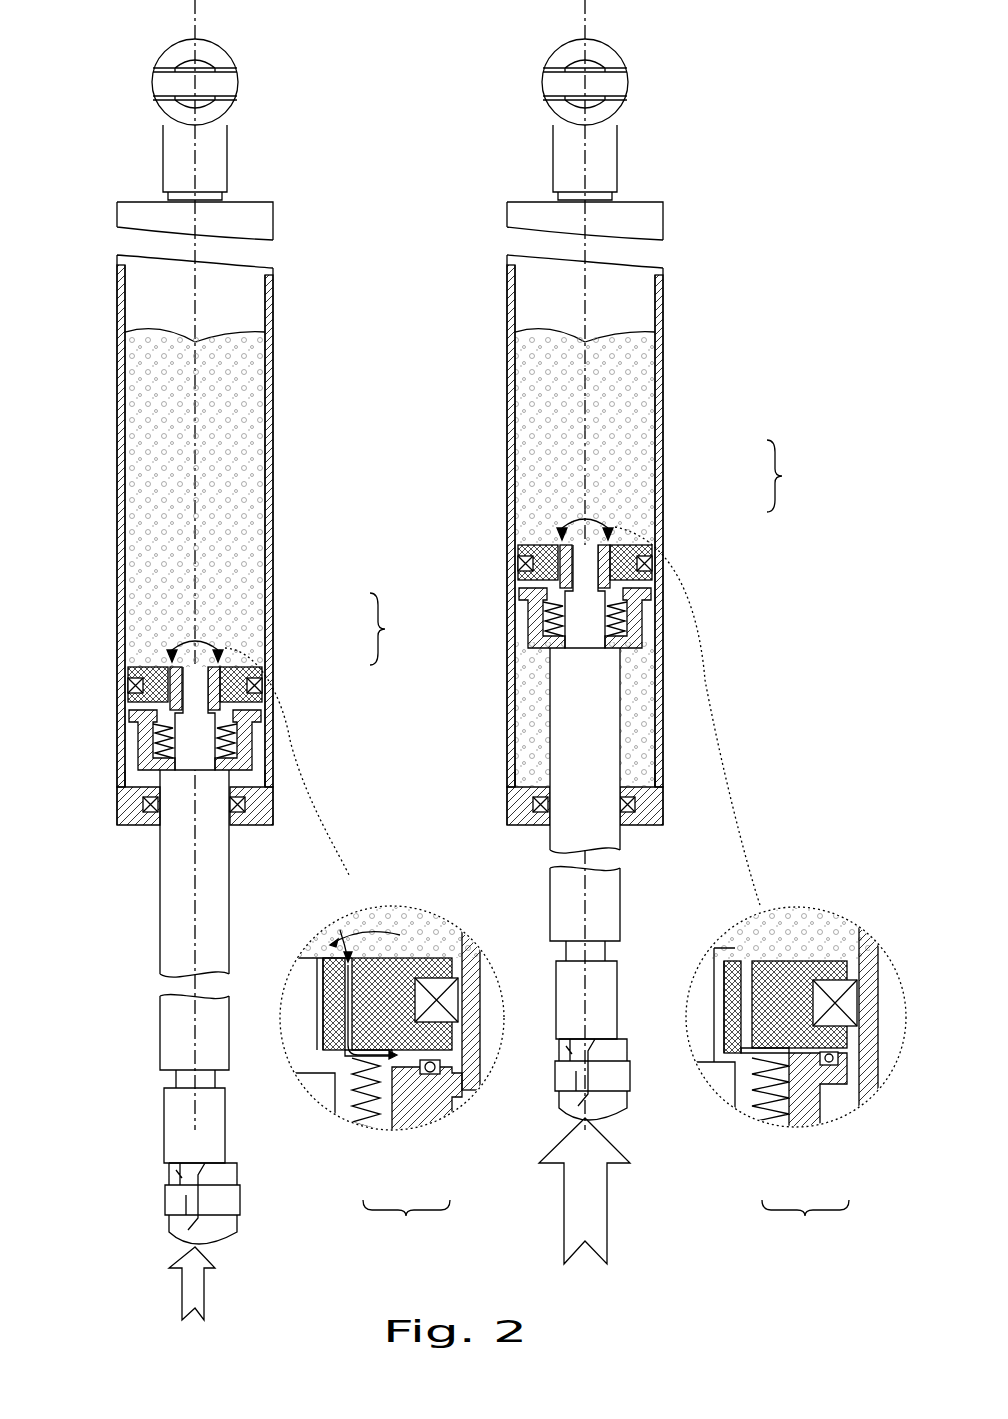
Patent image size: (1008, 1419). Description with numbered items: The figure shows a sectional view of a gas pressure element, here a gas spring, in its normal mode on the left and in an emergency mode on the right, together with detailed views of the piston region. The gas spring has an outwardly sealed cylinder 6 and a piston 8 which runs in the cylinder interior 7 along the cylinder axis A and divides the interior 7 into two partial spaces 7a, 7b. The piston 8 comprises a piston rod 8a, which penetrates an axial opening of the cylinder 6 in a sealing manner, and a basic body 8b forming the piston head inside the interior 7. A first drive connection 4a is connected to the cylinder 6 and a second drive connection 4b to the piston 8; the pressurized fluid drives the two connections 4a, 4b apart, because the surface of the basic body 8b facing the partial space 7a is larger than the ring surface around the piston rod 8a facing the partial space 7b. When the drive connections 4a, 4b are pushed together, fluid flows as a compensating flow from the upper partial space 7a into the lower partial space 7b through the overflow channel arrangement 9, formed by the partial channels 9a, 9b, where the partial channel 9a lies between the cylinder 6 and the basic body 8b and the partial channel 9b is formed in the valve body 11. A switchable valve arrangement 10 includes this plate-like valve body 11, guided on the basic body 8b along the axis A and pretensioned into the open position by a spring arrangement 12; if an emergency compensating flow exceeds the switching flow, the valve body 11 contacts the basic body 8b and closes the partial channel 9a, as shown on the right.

The cylinder axis A is at (195, 13).
The first drive connection 4a is at (225, 93).
The second drive connection 4b is at (230, 1200).
The cylinder 6 is at (272, 355).
The cylinder interior 7 is at (125, 735).
The partial space 7a is at (225, 470).
The partial space 7b is at (272, 765).
The piston 8 is at (174, 910).
The piston rod 8a is at (215, 887).
The basic body 8b is at (250, 745).
The overflow channel arrangement 9 is at (606, 848).
The partial channel 9a is at (266, 710).
The partial channel 9b is at (222, 655).
The valve arrangement 10 is at (102, 692).
The valve body 11 is at (157, 667).
The spring arrangement 12 is at (155, 745).